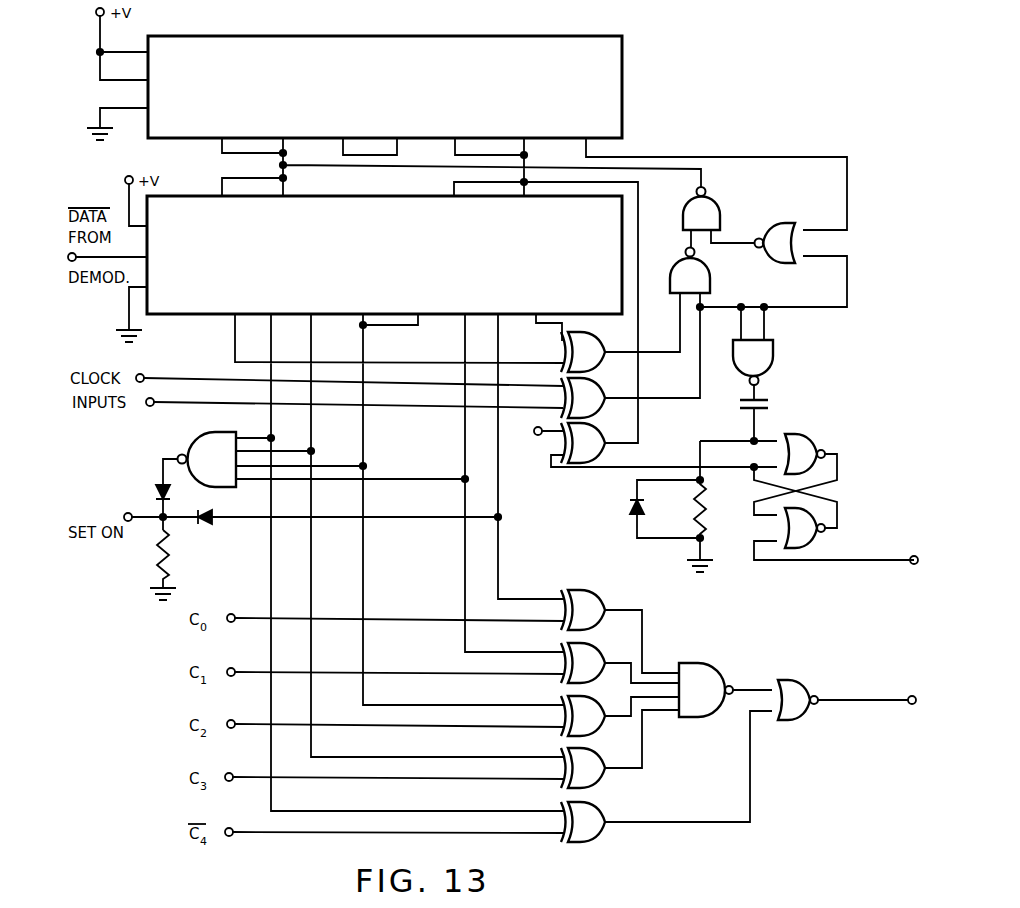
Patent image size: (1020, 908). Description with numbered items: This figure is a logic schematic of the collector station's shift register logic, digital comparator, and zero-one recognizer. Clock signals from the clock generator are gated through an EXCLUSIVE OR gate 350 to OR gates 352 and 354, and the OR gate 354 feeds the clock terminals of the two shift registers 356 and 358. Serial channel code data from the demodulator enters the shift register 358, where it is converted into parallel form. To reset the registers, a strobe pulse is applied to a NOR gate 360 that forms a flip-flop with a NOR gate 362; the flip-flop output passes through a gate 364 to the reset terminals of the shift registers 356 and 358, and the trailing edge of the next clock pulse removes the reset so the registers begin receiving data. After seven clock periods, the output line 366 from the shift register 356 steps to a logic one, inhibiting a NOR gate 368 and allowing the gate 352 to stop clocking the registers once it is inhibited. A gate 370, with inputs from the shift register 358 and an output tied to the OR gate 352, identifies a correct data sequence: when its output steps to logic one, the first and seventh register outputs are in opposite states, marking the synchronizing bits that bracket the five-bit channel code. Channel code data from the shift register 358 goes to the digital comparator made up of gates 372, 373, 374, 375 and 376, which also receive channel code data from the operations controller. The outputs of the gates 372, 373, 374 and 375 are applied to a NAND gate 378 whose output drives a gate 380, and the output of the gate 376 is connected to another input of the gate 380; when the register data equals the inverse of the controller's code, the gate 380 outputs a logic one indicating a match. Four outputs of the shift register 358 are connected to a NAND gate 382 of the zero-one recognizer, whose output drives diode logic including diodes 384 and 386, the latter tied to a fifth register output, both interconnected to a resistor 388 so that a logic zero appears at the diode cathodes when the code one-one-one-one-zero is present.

The EXCLUSIVE OR gate 350 is at (560, 397).
The OR gate 352 is at (699, 270).
The OR gate 354 is at (715, 214).
The shift register 356 is at (398, 70).
The shift register 358 is at (388, 254).
The NOR gate 360 is at (801, 538).
The NOR gate 362 is at (800, 445).
The gate 364 is at (560, 443).
The line 366 is at (758, 158).
The NOR gate 368 is at (787, 228).
The gate 370 is at (560, 351).
The gate 372 is at (585, 590).
The gate 373 is at (593, 665).
The gate 374 is at (580, 712).
The gate 375 is at (590, 770).
The gate 376 is at (585, 820).
The NAND gate 378 is at (710, 678).
The gate 380 is at (793, 690).
The NAND gate 382 is at (208, 441).
The diode 384 is at (160, 490).
The diode 386 is at (207, 527).
The resistor 388 is at (160, 548).